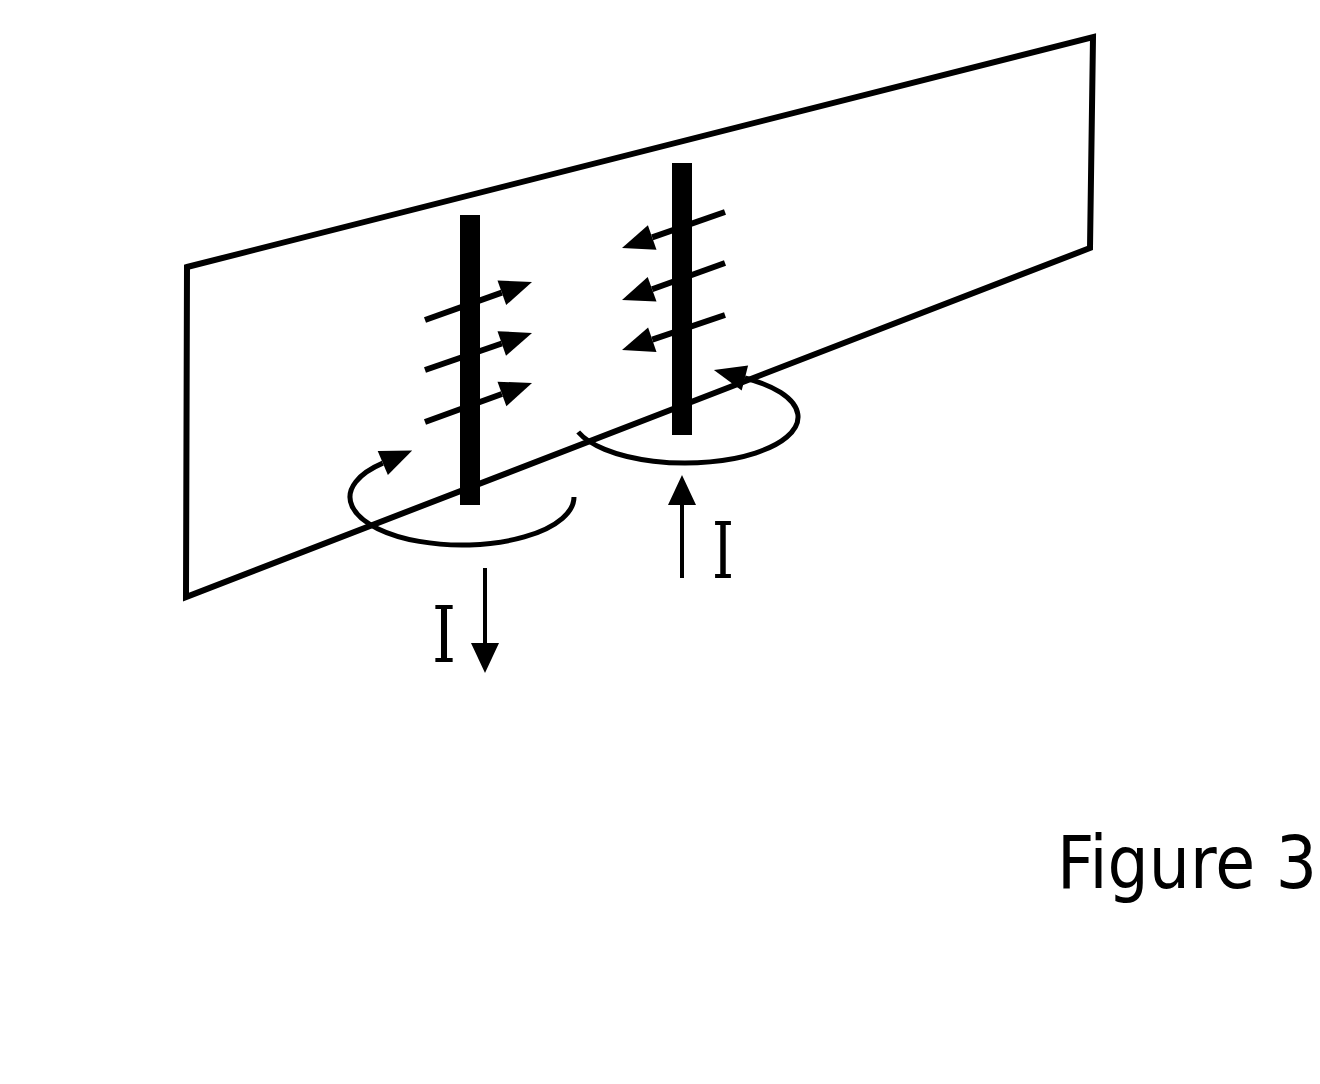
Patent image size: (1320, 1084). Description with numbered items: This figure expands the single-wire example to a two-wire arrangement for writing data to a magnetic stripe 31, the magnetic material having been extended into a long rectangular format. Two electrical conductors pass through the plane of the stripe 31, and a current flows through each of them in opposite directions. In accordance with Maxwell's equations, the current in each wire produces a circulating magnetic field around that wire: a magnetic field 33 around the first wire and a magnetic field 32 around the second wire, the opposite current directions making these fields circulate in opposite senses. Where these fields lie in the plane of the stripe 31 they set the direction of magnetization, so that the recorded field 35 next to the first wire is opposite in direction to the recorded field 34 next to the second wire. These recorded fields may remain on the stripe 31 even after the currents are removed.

The stripe 31 is at (229, 292).
The magnetic field 32 is at (763, 452).
The magnetic field 33 is at (347, 507).
The recorded field 34 is at (703, 295).
The recorded field 35 is at (445, 340).